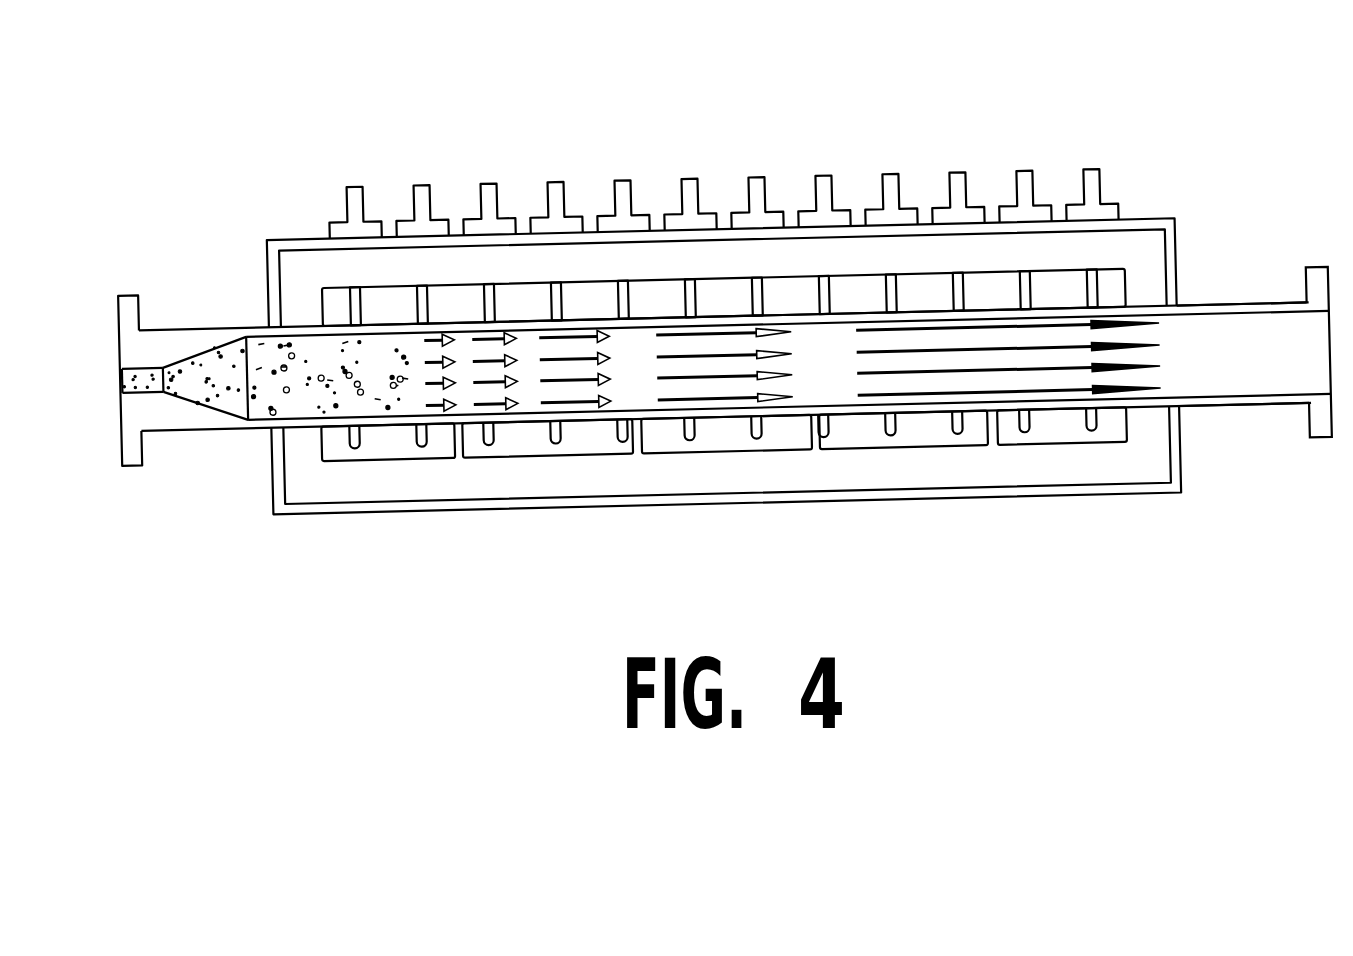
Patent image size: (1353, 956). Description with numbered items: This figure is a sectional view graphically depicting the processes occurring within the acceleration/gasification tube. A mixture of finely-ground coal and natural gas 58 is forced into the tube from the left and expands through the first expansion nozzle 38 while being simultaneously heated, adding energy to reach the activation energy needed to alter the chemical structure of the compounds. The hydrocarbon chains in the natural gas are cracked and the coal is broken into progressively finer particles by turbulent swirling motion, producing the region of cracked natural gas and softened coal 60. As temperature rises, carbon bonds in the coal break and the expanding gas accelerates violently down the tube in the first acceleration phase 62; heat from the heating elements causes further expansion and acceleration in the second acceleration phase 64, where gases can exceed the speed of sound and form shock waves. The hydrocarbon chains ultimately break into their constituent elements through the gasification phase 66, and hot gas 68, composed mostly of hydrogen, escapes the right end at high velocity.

The first expansion nozzle 38 is at (176, 308).
The mixture of finely-ground coal and natural gas 58 is at (100, 462).
The cracked natural gas and softened coal 60 is at (293, 464).
The first acceleration phase 62 is at (371, 249).
The second acceleration phase 64 is at (529, 247).
The gasification phase 66 is at (908, 244).
The hot gas 68 is at (1254, 263).